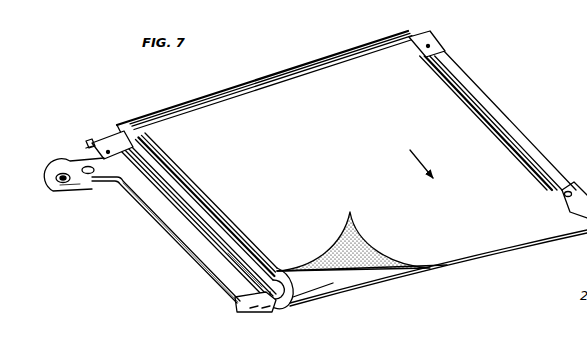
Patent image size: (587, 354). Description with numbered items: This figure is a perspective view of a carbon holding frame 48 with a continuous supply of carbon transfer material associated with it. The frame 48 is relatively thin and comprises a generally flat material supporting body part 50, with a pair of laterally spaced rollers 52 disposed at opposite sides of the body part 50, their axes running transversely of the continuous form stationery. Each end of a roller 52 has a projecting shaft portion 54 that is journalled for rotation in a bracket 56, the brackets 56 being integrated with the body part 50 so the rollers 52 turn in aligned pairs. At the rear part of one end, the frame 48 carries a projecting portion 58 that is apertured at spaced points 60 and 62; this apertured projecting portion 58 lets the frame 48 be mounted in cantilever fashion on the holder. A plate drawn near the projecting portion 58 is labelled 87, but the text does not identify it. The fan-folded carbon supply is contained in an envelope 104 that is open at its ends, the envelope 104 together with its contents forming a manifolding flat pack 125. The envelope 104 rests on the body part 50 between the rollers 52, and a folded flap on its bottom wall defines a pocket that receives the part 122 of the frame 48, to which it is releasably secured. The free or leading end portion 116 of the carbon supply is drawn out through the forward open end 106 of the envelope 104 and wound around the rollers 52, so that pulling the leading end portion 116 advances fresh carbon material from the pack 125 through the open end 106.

The part of the frame 122 is at (117, 126).
The rollers 52 is at (110, 138).
The projecting shaft portion 54 is at (90, 147).
The brackets 56 is at (88, 144).
The mounting plate 87 is at (65, 184).
The aperture 60 is at (60, 182).
The projecting portion 58 is at (72, 185).
The aperture 62 is at (90, 177).
The envelope 104 is at (170, 203).
The body part 50 is at (168, 221).
The carbon holding frame 48 is at (182, 250).
The flat pack 125 is at (233, 264).
The forward open end 106 is at (252, 288).
The leading end portion 116 is at (498, 253).